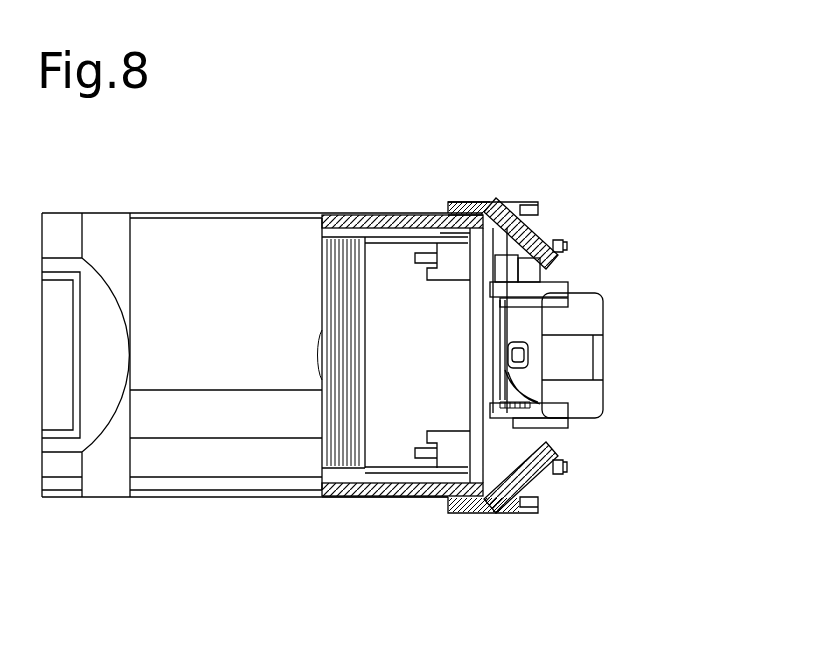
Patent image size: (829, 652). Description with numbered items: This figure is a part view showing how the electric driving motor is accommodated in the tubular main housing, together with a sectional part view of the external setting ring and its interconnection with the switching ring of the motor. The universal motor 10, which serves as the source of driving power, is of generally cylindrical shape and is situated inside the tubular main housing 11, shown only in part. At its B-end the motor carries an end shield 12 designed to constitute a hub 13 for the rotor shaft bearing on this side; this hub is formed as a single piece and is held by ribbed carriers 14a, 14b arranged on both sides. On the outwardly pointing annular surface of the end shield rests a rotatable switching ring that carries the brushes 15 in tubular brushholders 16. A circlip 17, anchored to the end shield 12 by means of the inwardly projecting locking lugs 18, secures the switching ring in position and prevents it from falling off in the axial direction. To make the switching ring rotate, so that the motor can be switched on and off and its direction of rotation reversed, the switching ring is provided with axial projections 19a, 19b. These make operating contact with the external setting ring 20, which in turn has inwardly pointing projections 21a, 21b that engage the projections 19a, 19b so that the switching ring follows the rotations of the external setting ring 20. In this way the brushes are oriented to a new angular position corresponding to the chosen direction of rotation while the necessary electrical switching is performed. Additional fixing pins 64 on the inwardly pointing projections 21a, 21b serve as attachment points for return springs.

The universal motor 10 is at (340, 212).
The tubular main housing 11 is at (360, 500).
The end shield 12 is at (375, 212).
The hub 13 is at (604, 292).
The ribbed carrier 14a is at (572, 282).
The ribbed carrier 14b is at (567, 428).
The brushes 15 is at (530, 352).
The tubular brushholders 16 is at (530, 360).
The circlip 17 is at (490, 200).
The locking lugs 18 is at (428, 212).
The axial projection 19a is at (550, 226).
The axial projection 19b is at (512, 515).
The external setting ring 20 is at (465, 200).
The inwardly pointing projection 21a is at (522, 200).
The inwardly pointing projection 21b is at (545, 475).
The fixing pins 64 is at (565, 238).